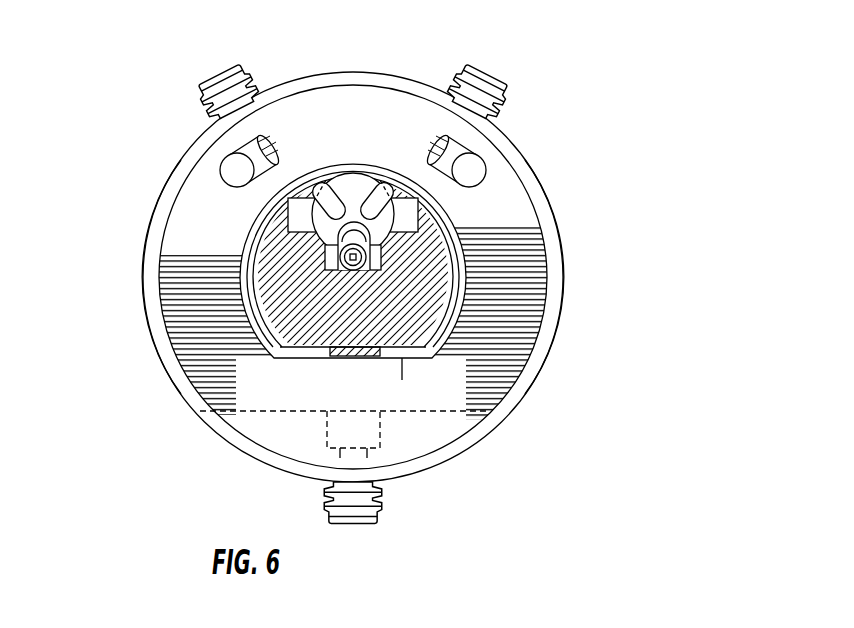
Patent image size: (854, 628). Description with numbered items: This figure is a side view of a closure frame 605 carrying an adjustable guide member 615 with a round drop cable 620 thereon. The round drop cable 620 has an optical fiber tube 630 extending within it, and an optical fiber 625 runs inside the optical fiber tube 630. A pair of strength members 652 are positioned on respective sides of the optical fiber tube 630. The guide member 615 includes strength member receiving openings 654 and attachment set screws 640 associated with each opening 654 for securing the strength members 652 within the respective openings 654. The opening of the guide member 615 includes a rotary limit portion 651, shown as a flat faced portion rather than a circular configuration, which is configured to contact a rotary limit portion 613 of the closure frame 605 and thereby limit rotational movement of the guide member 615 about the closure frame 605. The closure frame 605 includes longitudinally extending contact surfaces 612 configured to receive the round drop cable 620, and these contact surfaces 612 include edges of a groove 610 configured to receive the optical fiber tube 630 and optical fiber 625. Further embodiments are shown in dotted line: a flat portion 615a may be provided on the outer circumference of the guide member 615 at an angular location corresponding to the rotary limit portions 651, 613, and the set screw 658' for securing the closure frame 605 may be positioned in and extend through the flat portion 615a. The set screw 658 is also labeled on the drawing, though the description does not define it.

The closure frame 605 is at (430, 312).
The groove 610 is at (462, 292).
The contact surfaces 612 is at (338, 256).
The rotary limit portion 613 is at (413, 350).
The guide member 615 is at (135, 190).
The flat portion 615a is at (285, 413).
The round drop cable 620 is at (394, 220).
The optical fiber 625 is at (332, 350).
The optical fiber tube 630 is at (352, 272).
The attachment set screws 640 is at (218, 70).
The rotary limit portion 651 is at (402, 357).
The strength members 652 is at (222, 162).
The strength member receiving openings 654 is at (433, 148).
The bottom screw 658 is at (416, 518).
The set screw 658' is at (446, 474).